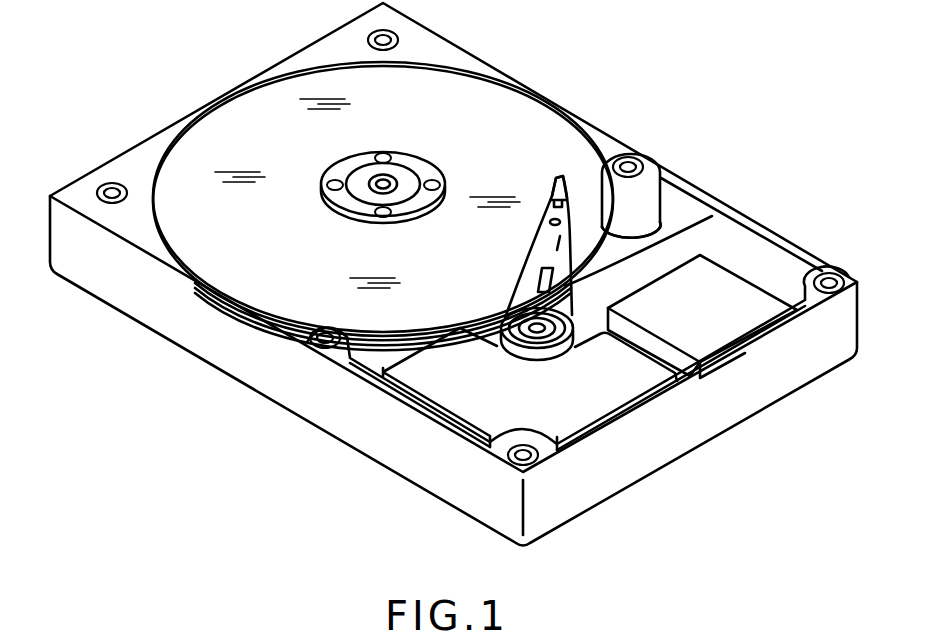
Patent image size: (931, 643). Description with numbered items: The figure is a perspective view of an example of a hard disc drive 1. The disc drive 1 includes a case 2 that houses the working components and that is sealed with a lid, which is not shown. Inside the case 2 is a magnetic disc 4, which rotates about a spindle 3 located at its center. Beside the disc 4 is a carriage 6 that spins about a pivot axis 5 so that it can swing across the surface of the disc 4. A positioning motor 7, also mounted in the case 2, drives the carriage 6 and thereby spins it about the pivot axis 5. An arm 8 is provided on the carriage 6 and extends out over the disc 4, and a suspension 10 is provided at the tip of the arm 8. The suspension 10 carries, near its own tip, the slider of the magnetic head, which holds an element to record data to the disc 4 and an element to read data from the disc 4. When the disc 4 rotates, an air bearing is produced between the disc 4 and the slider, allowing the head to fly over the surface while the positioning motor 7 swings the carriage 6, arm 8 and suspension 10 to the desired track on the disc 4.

The disc drive 1 is at (738, 90).
The case 2 is at (248, 373).
The spindle 3 is at (398, 178).
The disc 4 is at (497, 118).
The pivot axis 5 is at (555, 345).
The carriage 6 is at (714, 214).
The positioning motor 7 is at (462, 408).
The arm 8 is at (558, 298).
The suspension 10 is at (555, 178).